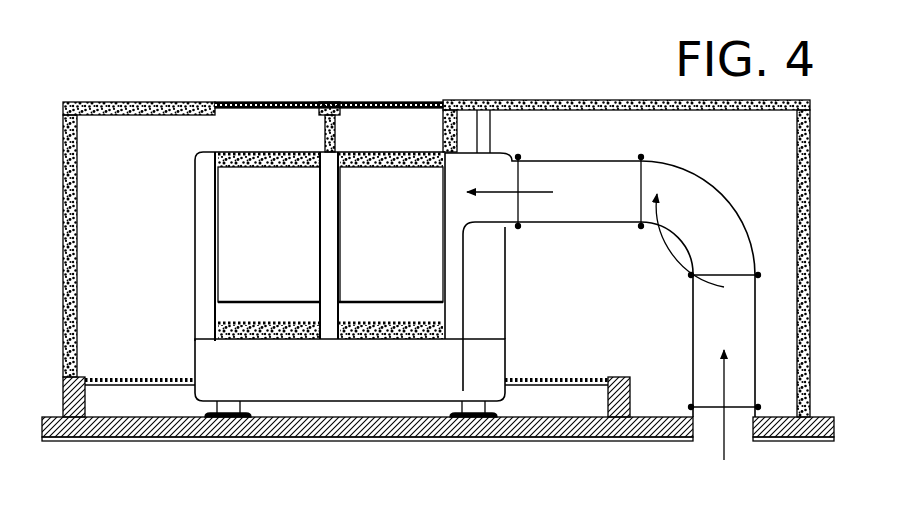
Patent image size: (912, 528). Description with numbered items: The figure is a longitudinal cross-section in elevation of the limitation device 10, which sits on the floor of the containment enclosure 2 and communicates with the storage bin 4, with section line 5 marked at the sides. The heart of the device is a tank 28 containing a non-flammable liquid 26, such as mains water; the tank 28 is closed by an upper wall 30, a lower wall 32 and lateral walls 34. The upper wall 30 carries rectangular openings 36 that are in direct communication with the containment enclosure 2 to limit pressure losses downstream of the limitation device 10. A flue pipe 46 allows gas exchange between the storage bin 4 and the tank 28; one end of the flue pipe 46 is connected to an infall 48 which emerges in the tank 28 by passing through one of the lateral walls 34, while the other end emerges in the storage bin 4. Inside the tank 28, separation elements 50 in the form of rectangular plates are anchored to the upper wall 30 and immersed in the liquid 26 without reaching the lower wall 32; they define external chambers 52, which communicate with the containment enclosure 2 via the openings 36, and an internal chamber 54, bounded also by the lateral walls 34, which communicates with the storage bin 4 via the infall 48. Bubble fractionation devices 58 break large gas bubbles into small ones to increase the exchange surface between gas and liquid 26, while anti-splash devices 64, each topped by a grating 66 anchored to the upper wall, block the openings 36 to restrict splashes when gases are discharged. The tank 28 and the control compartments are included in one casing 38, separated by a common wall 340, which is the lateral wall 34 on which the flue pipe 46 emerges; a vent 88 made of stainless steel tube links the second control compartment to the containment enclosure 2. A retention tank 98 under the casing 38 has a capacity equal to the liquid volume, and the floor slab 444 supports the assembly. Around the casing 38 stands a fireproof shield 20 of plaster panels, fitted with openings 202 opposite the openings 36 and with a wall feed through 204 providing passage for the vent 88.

The containment enclosure 2 is at (125, 77).
The storage bin 4 is at (650, 498).
The section line 5- 5 is at (443, 285).
The limitation device 10 is at (168, 185).
The fireproof shield 20 is at (805, 186).
The non-flammable liquid 26 is at (380, 379).
The tank 28 is at (188, 362).
The upper wall 30 is at (200, 152).
The lower wall 32 is at (415, 402).
The lateral walls 34 is at (195, 228).
The openings 36 is at (257, 144).
The casing 38 is at (517, 311).
The flue pipe 46 is at (713, 185).
The infall 48 is at (488, 212).
The separation elements 50 is at (320, 284).
The external chambers 52 is at (280, 244).
The internal chamber 54 is at (205, 290).
The bubble fractionation devices 58 is at (268, 330).
The anti-splash devices 64 is at (298, 160).
The grating 66 is at (282, 150).
The vent 88 is at (487, 127).
The retention tank 98 is at (540, 405).
The openings 202 is at (362, 117).
The wall feed through 204 is at (478, 97).
The common wall 340 is at (467, 369).
The floor slab 444 is at (108, 438).